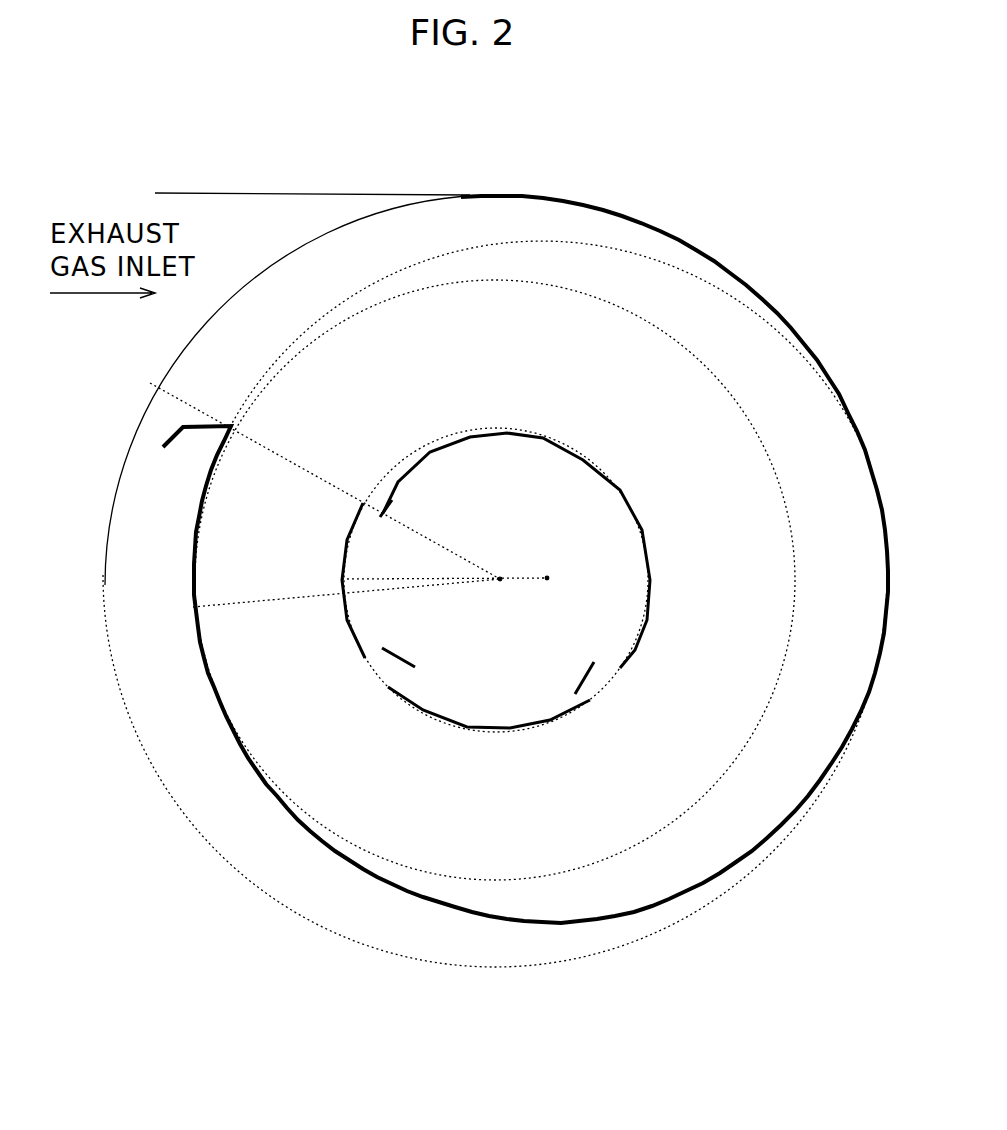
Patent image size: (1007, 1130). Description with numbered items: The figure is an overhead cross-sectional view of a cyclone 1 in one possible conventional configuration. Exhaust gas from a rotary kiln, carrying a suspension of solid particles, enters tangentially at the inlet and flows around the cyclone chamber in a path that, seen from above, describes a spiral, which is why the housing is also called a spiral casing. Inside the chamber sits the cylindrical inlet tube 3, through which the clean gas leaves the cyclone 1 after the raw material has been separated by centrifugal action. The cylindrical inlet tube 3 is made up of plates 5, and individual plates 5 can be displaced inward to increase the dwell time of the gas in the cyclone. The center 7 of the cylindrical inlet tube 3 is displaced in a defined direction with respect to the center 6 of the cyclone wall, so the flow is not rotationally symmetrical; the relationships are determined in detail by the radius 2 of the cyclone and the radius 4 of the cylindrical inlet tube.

The cyclone 1 is at (665, 230).
The radius of the cyclone 2 is at (442, 588).
The cylindrical inlet tube 3 is at (577, 452).
The radius of the cylindrical inlet tube 4 is at (413, 579).
The plates 5 is at (386, 511).
The center of the cyclone wall 6 is at (548, 577).
The center of the cylindrical inlet tube 7 is at (500, 578).